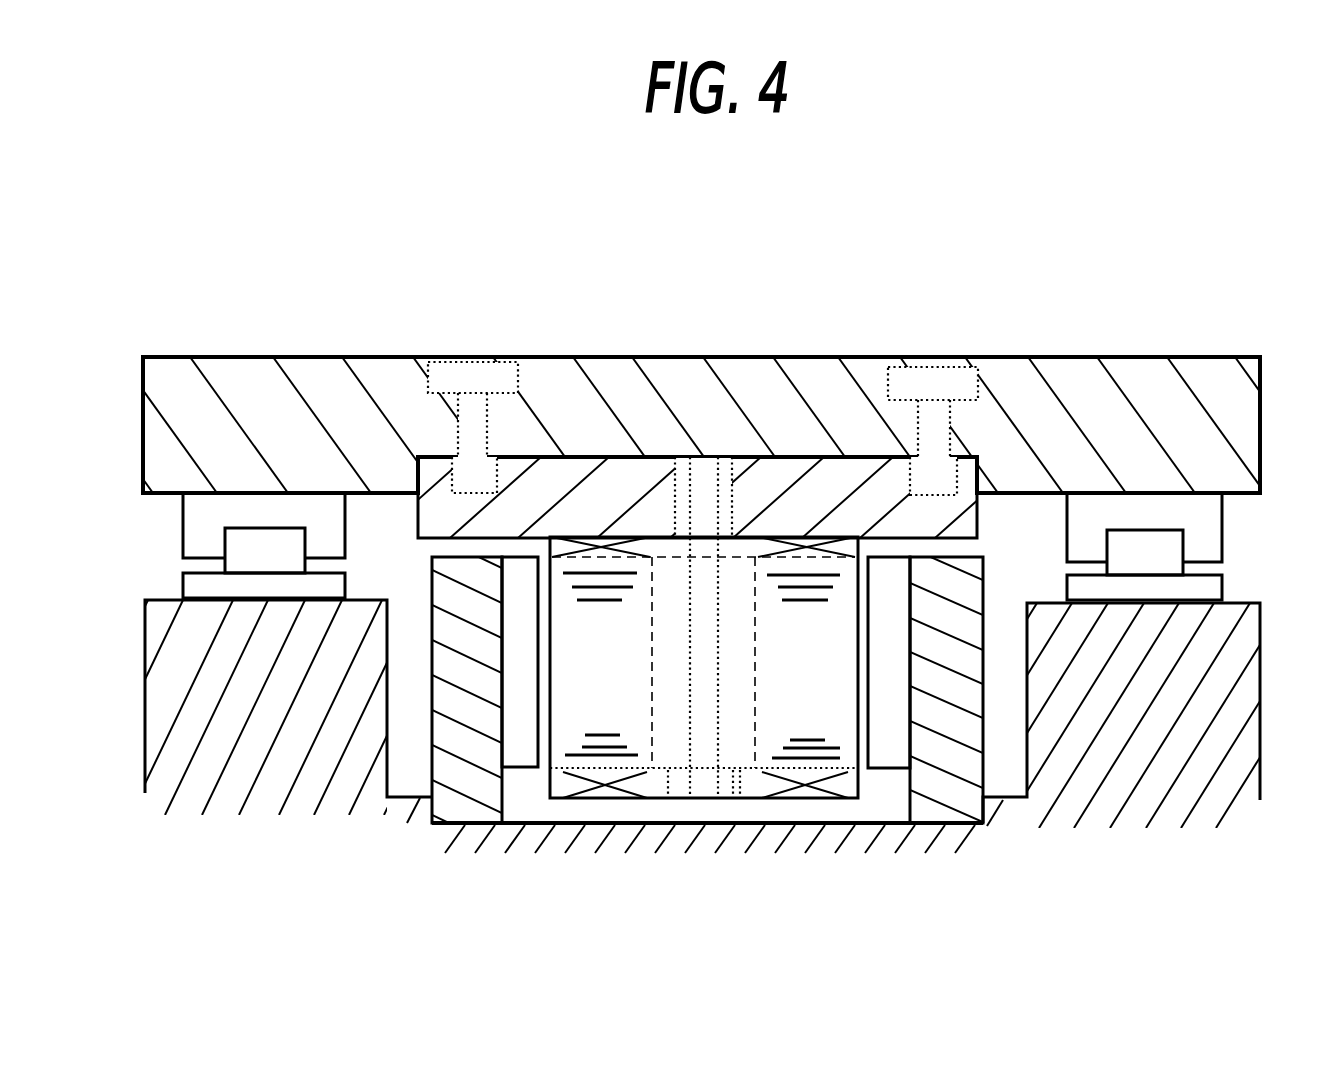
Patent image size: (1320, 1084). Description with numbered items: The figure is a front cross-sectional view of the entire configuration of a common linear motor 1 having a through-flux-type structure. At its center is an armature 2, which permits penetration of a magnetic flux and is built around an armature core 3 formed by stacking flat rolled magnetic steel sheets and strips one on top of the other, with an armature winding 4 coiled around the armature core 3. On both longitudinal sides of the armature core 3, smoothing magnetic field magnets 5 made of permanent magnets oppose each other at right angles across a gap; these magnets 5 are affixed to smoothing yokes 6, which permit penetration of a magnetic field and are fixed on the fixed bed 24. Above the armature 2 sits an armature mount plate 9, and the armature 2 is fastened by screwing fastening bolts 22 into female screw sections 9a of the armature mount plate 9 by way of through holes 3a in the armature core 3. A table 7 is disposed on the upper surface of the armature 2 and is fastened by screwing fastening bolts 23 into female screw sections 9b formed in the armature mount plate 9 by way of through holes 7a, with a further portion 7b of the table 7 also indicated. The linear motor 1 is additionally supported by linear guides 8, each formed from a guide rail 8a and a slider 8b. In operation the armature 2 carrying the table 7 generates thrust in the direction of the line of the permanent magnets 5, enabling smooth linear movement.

The linear motor 1 is at (538, 306).
The armature 2 is at (848, 813).
The armature core 3 is at (832, 713).
The through holes 3a is at (693, 683).
The armature winding 4 is at (837, 785).
The smoothing magnetic field magnets 5 is at (523, 743).
The smoothing yokes 6 is at (468, 802).
The table 7 is at (1065, 372).
The through holes 7a is at (961, 372).
The mounting surface 7b is at (853, 462).
The linear guides 8 is at (1145, 399).
The guide rails 8a is at (1143, 557).
The sliders 8b is at (1116, 513).
The armature mount plate 9 is at (615, 478).
The female screw sections 9a is at (717, 508).
The female screw sections 9b is at (470, 356).
The fastening bolts 22 is at (707, 783).
The fastening bolts 23 is at (440, 356).
The fixed bed 24 is at (268, 743).